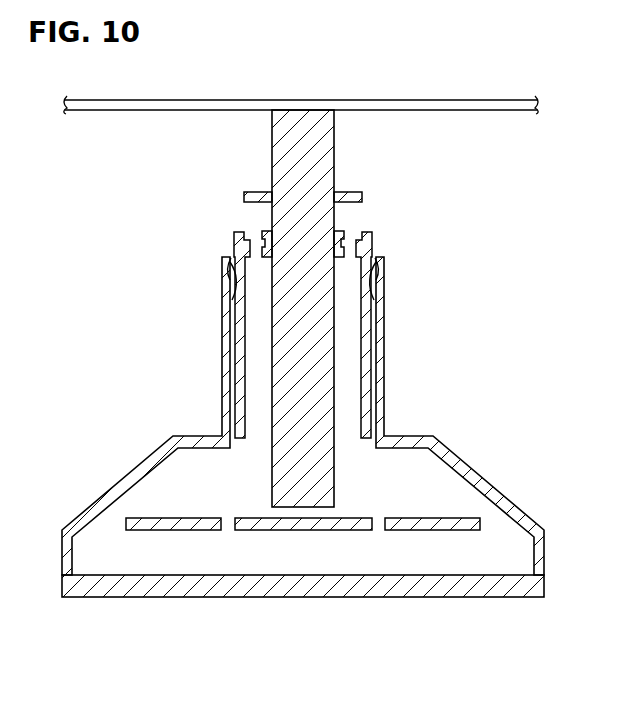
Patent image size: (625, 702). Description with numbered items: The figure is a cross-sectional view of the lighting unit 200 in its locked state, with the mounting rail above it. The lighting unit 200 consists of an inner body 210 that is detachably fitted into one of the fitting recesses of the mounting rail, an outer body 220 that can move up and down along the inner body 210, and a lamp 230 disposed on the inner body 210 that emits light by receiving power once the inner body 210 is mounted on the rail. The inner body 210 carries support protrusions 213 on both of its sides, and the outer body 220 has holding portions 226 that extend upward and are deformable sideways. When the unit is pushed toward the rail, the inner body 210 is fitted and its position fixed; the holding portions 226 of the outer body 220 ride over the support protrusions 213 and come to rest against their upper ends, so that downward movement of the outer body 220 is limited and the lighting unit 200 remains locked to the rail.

The lighting unit 200 is at (190, 368).
The inner body 210 is at (366, 244).
The support protrusions 213 is at (379, 306).
The outer body 220 is at (437, 448).
The holding portions 226 is at (381, 268).
The lamp 230 is at (335, 530).